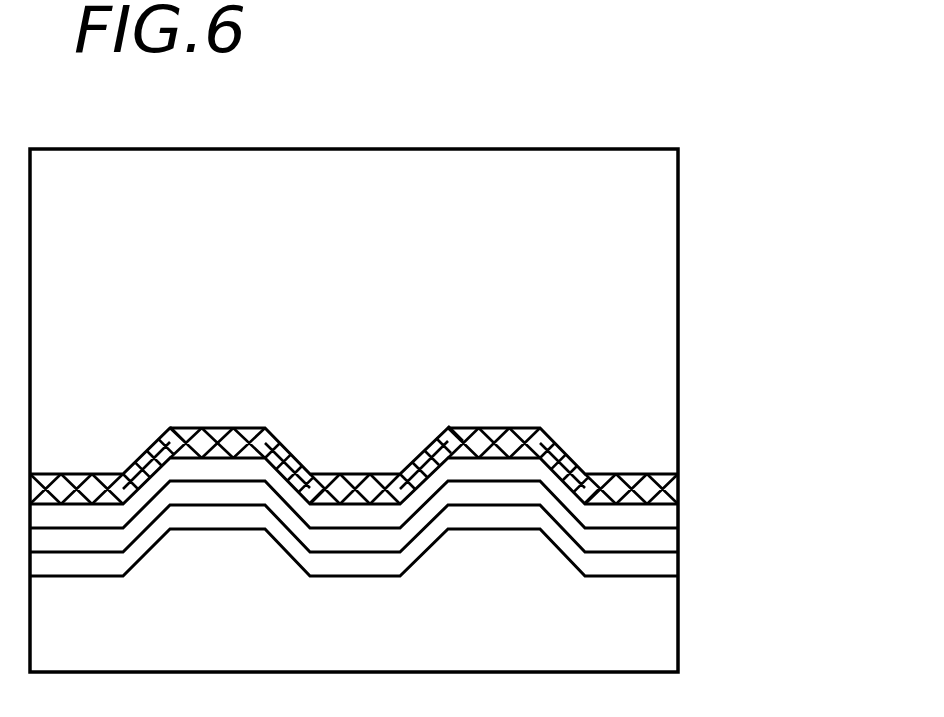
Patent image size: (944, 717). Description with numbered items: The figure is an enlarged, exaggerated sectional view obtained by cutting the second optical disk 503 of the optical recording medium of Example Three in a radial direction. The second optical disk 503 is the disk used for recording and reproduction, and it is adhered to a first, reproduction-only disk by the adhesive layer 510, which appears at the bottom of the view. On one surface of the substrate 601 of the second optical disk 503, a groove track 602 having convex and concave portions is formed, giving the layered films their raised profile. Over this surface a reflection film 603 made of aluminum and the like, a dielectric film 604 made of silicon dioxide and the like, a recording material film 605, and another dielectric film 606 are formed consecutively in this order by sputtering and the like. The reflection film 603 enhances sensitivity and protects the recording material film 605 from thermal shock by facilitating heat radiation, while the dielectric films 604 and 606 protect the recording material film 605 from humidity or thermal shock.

The second optical disk 503 is at (678, 173).
The substrate 601 is at (638, 263).
The groove track 602 is at (458, 427).
The reflection film 603 is at (678, 488).
The dielectric film 604 is at (678, 518).
The recording material film 605 is at (678, 542).
The dielectric film 606 is at (678, 565).
The adhesive layer 510 is at (662, 640).